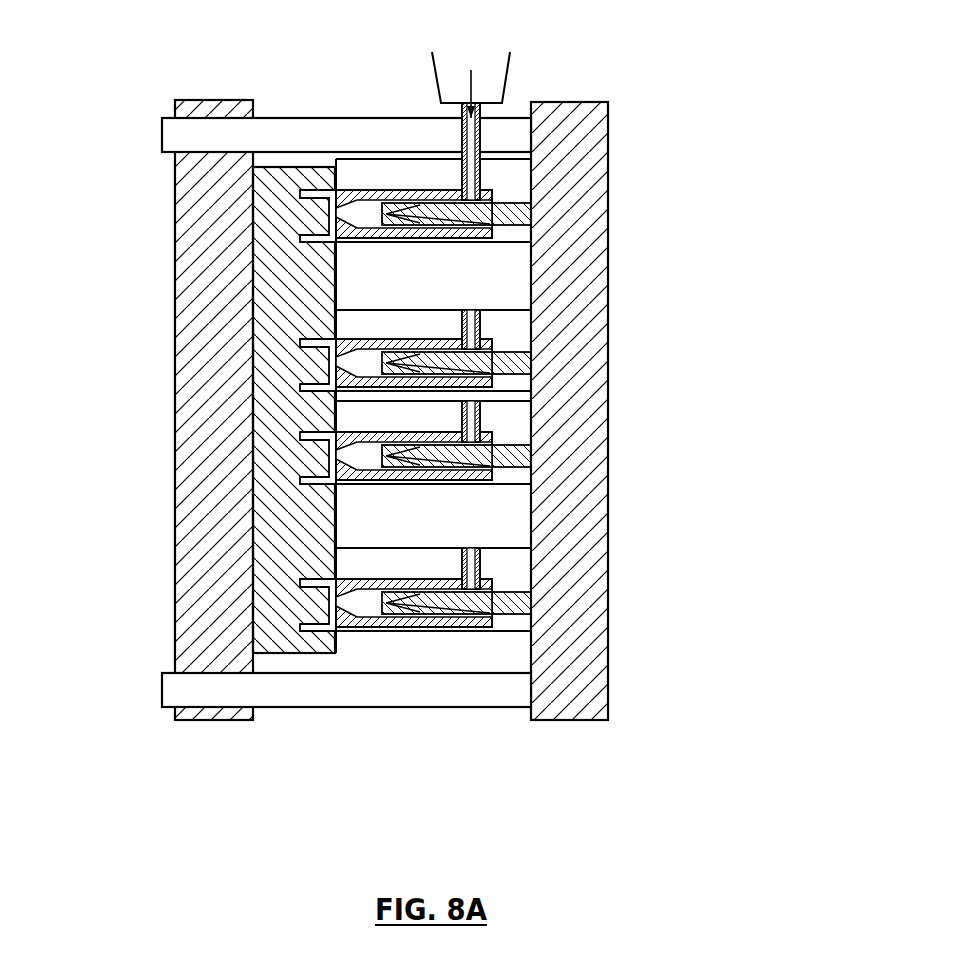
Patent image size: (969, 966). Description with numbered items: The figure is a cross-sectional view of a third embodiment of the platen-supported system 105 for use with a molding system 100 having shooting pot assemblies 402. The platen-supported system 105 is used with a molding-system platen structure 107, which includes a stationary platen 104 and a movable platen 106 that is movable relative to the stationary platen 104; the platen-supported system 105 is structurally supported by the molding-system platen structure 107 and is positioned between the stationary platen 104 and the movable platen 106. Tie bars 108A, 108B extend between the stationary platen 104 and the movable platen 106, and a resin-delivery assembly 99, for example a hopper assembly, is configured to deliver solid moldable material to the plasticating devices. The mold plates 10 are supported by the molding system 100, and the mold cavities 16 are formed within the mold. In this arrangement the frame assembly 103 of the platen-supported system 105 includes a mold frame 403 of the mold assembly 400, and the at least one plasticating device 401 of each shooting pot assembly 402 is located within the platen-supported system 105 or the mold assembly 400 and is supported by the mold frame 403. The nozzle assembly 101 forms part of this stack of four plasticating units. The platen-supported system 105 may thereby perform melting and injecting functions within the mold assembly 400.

The mold plates 10 is at (460, 388).
The mold cavities 16 is at (303, 583).
The resin-delivery assembly 99 is at (507, 70).
The molding system 100 is at (425, 427).
The nozzle assembly 101 is at (534, 392).
The frame assembly 103 is at (513, 406).
The stationary platen 104 is at (563, 721).
The platen-supported system 105 is at (575, 422).
The movable platen 106 is at (210, 720).
The molding-system platen structure 107 is at (321, 461).
The tie bar 108A is at (160, 134).
The tie bar 108B is at (160, 688).
The mold assembly 400 is at (490, 383).
The plasticating device 401 is at (700, 288).
The shooting pot assembly 402 is at (249, 462).
The mold frame 403 is at (521, 290).